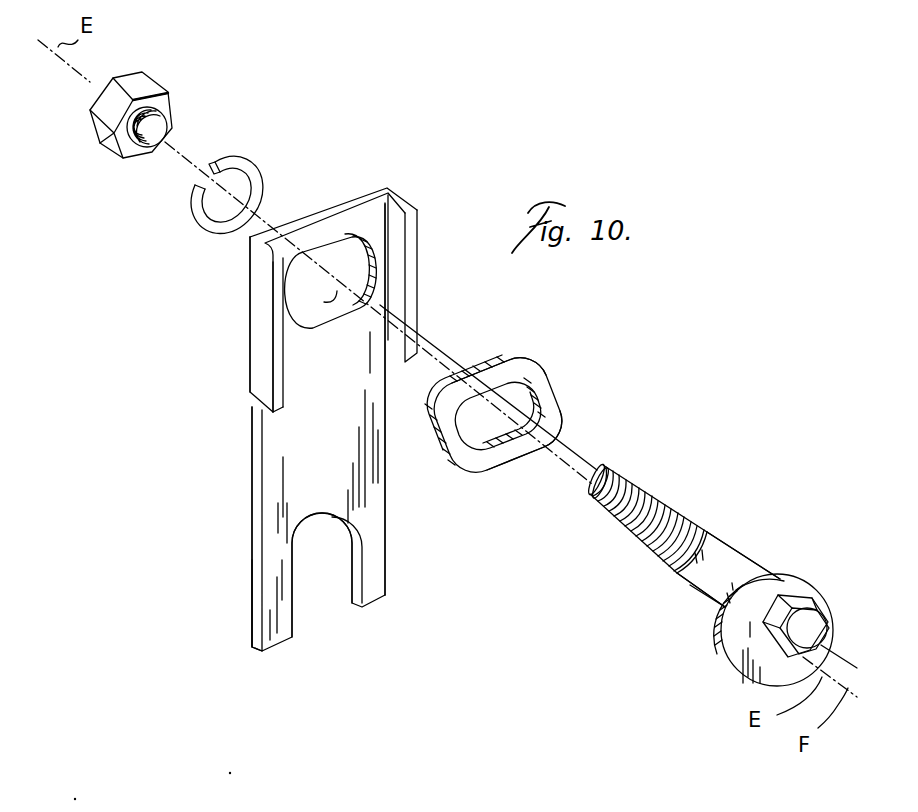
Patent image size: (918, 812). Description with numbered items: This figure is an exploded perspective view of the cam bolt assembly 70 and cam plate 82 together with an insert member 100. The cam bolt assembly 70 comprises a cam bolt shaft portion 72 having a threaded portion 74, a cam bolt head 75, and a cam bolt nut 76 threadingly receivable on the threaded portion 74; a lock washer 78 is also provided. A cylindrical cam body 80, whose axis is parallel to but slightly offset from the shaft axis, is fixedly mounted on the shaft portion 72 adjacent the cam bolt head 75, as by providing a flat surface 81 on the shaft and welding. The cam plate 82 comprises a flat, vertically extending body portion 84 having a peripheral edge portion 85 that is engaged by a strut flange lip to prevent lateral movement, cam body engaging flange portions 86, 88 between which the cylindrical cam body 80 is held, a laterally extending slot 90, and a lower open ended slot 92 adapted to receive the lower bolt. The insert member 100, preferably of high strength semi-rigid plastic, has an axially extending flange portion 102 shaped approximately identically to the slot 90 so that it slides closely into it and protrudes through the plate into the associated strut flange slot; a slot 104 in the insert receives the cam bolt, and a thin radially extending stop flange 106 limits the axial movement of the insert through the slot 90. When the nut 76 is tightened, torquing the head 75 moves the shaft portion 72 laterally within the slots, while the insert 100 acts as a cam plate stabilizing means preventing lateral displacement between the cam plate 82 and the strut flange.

The cam bolt assembly 70 is at (725, 570).
The cam bolt shaft portion 72 is at (713, 547).
The threaded portion 74 is at (643, 490).
The cam bolt head 75 is at (817, 623).
The cam bolt nut 76 is at (147, 92).
The lock washer 78 is at (250, 168).
The cylindrical cam body 80 is at (787, 572).
The flat surface 81 is at (707, 573).
The cam plate 82 is at (276, 425).
The flat vertically extending body portion 84 is at (268, 508).
The peripheral edge portion 85 is at (257, 595).
The cam body engaging flange portion 86 is at (415, 267).
The cam body engaging flange portion 88 is at (257, 380).
The laterally extending slot 90 is at (287, 279).
The lower open ended slot 92 is at (317, 590).
The insert member 100 is at (540, 392).
The axially extending flange portion 102 is at (490, 358).
The slot 104 is at (510, 395).
The radially extending stop flange 106 is at (551, 427).